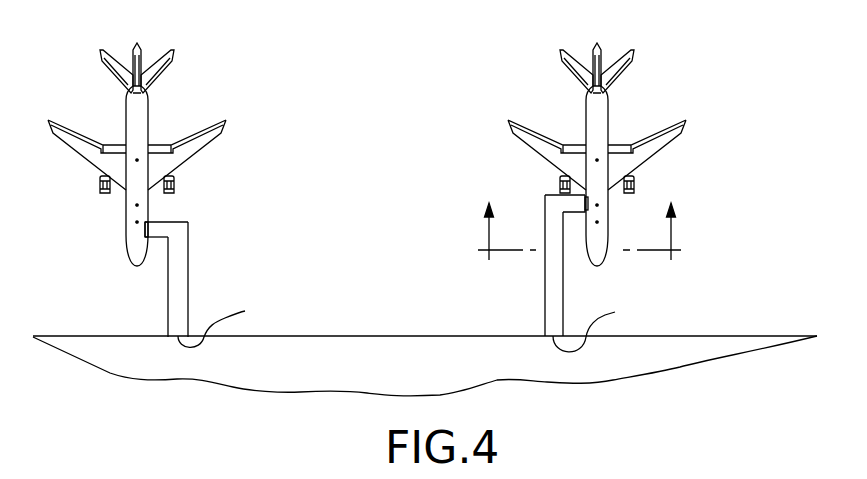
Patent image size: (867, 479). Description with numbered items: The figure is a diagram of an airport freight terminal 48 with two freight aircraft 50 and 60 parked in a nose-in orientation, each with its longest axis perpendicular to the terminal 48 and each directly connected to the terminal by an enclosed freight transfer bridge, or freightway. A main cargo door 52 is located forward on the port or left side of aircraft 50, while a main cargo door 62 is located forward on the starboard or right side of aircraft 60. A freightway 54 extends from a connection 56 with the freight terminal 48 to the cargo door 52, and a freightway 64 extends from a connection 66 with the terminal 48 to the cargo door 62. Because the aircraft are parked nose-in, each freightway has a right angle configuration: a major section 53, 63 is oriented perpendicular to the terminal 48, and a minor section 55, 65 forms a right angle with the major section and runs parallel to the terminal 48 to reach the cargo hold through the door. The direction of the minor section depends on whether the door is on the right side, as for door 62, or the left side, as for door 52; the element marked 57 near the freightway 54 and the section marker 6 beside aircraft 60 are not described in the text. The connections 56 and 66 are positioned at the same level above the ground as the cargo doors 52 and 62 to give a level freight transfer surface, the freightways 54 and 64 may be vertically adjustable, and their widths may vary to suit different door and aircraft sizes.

The airport freight terminal 48 is at (668, 365).
The freight aircraft 50 is at (226, 88).
The main cargo door 52 is at (144, 229).
The major section 53 is at (168, 308).
The freightway 54 is at (165, 244).
The minor section 55 is at (167, 228).
The connection 56 is at (229, 321).
The arm underside 57 is at (167, 238).
The freight aircraft 60 is at (677, 78).
The main cargo door 62 is at (588, 200).
The major section 63 is at (545, 313).
The freightway 64 is at (540, 210).
The minor section 65 is at (569, 203).
The connection 66 is at (602, 327).
The section line 6- 6 is at (579, 214).